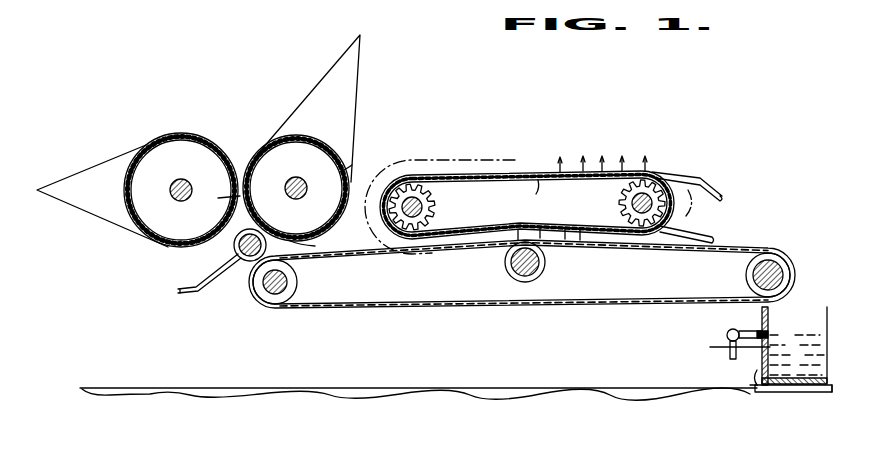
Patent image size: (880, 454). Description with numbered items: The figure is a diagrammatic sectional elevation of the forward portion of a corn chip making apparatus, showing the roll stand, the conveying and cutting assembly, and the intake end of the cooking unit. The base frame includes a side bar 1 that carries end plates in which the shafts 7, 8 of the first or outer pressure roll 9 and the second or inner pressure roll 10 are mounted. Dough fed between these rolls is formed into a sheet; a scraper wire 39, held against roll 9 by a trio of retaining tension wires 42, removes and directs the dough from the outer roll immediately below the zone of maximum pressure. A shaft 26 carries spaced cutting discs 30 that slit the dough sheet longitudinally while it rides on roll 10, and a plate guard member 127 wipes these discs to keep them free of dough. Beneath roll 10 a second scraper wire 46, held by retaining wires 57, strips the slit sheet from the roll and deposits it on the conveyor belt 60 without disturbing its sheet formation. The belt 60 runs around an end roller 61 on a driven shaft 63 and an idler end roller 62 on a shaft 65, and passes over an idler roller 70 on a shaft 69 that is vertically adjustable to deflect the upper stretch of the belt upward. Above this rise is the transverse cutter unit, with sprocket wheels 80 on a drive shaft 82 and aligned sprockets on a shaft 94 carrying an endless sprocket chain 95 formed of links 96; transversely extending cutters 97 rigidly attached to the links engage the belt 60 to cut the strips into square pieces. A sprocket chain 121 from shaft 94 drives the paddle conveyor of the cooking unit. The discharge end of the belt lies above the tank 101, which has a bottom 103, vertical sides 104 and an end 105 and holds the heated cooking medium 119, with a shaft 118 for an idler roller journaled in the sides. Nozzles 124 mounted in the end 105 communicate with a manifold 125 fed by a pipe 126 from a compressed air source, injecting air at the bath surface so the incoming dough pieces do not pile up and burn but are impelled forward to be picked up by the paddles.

The side bar 1 is at (590, 392).
The shaft 7 is at (202, 177).
The shaft 8 is at (303, 195).
The first or outer pressure roll 9 is at (196, 135).
The second or inner pressure roll 10 is at (352, 165).
The shaft 26 is at (209, 273).
The cutting discs 30 is at (233, 243).
The scraper wire 39 is at (217, 208).
The retaining tension wires 42 is at (95, 167).
The scraper wire 46 is at (310, 243).
The retaining wires 57 is at (358, 103).
The conveyor belt 60 is at (742, 245).
The end roller 61 is at (297, 282).
The end roller 62 is at (746, 270).
The shaft 63 is at (268, 303).
The shaft 65 is at (754, 282).
The shaft 69 is at (507, 264).
The idler roller 70 is at (545, 262).
The sprocket wheels 80 is at (436, 203).
The shaft 82 is at (405, 215).
The shaft 94 is at (652, 207).
The sprocket chain 95 is at (546, 194).
The links 96 is at (595, 156).
The cutters 97 is at (562, 157).
The tank 101 is at (805, 409).
The bottom 103 is at (777, 392).
The vertical sides 104 is at (800, 310).
The end 105 is at (760, 392).
The shaft 118 is at (739, 380).
The heated cooking medium 119 is at (813, 402).
The sprocket chain 121 is at (718, 190).
The nozzles 124 is at (785, 332).
The manifold 125 is at (727, 334).
The pipe 126 is at (732, 359).
The plate guard member 127 is at (205, 292).